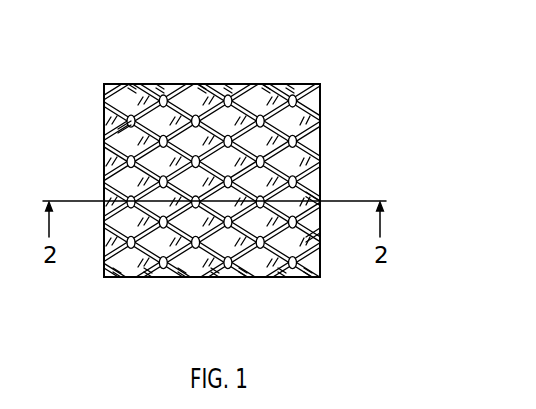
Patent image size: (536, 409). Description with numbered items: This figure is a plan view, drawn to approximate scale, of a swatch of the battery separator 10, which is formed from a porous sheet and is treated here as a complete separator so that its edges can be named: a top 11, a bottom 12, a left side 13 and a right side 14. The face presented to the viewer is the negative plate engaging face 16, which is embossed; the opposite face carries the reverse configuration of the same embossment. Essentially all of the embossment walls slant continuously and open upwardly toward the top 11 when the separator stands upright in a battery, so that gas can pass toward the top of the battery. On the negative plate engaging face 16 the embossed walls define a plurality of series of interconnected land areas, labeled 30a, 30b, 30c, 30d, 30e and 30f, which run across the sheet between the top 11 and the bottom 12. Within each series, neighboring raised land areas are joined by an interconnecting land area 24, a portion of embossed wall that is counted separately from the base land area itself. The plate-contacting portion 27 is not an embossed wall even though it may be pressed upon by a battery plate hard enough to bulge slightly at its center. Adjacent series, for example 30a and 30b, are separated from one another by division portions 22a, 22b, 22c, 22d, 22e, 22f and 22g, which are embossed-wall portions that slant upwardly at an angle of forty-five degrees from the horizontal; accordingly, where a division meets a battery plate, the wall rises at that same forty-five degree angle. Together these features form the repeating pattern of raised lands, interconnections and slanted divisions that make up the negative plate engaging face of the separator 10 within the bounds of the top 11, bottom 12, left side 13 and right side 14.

The battery separator 10 is at (364, 91).
The top 11 is at (130, 84).
The bottom 12 is at (107, 278).
The left side 13 is at (104, 153).
The right side 14 is at (321, 133).
The negative plate engaging face 16 is at (127, 137).
The interconnecting land area 24 is at (316, 192).
The portion 27 is at (316, 233).
The series of interconnected land areas 30a is at (133, 84).
The series of interconnected land areas 30b is at (160, 84).
The series of interconnected land areas 30c is at (202, 84).
The series of interconnected land areas 30d is at (228, 84).
The series of interconnected land areas 30e is at (267, 84).
The series of interconnected land areas 30f is at (290, 84).
The division portion 22a is at (117, 277).
The division portion 22b is at (148, 277).
The division portion 22c is at (182, 277).
The division portion 22d is at (215, 277).
The division portion 22e is at (243, 277).
The division portion 22f is at (282, 277).
The division portion 22g is at (308, 277).